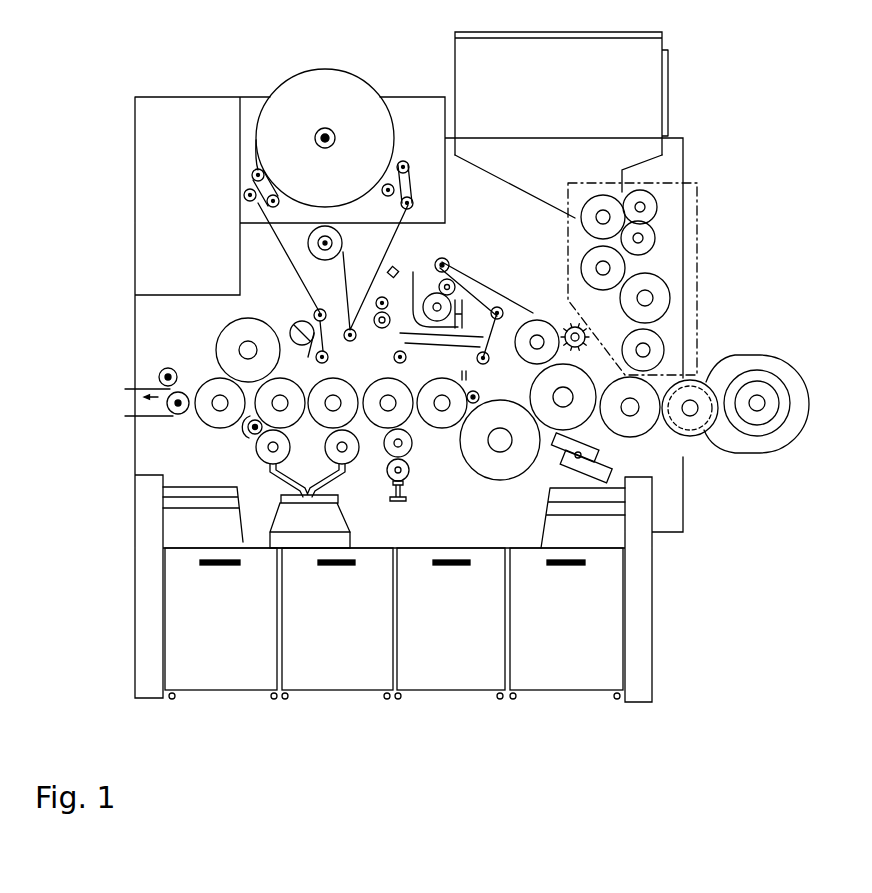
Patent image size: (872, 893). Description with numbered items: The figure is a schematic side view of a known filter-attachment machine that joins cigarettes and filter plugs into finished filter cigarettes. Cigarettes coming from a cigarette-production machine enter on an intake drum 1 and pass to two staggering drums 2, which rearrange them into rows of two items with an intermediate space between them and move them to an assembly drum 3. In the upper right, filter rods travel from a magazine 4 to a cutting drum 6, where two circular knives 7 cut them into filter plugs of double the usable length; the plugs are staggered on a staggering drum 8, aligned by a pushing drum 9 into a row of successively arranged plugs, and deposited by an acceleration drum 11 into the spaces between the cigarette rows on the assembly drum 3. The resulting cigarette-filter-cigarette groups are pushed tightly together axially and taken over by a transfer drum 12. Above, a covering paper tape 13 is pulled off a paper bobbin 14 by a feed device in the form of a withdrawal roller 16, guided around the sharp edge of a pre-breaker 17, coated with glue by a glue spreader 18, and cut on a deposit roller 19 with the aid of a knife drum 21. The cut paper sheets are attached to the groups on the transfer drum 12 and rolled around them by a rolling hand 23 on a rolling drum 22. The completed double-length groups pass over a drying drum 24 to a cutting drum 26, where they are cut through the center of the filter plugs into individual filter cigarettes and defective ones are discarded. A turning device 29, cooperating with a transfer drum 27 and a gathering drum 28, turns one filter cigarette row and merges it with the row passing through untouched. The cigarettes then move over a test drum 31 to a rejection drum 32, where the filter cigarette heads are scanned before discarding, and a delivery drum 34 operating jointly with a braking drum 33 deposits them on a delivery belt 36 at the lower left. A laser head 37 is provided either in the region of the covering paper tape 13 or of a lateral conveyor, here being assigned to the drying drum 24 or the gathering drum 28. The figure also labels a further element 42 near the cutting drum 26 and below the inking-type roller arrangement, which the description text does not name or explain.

The intake drum 1 is at (791, 404).
The staggering drums 2 is at (700, 355).
The assembly drum 3 is at (757, 452).
The magazine 4 is at (652, 105).
The cutting drum 6 is at (628, 175).
The circular knives 7 is at (658, 208).
The staggering drum 8 is at (625, 268).
The pushing drum 9 is at (670, 298).
The acceleration drum 11 is at (665, 350).
The transfer drum 12 is at (575, 420).
The covering paper tape 13 is at (405, 195).
The paper bobbin 14 is at (308, 243).
The withdrawal roller 16 is at (363, 337).
The pre-breaker 17 is at (367, 337).
The glue spreader 18 is at (428, 282).
The deposit roller 19 is at (530, 312).
The knife drum 21 is at (570, 326).
The rolling drum 22 is at (493, 476).
The rolling hand 23 is at (563, 431).
The drying drum 24 is at (424, 422).
The cutting drum 26 is at (407, 422).
The transfer drum 27 is at (352, 422).
The gathering drum 28 is at (300, 420).
The turning device 29 is at (250, 437).
The test drum 31 is at (216, 352).
The rejection drum 32 is at (203, 386).
The braking drum 33 is at (158, 377).
The delivery drum 34 is at (178, 416).
The delivery belt 36 is at (125, 389).
The laser head 37 is at (450, 374).
The ink supply 42 is at (262, 490).